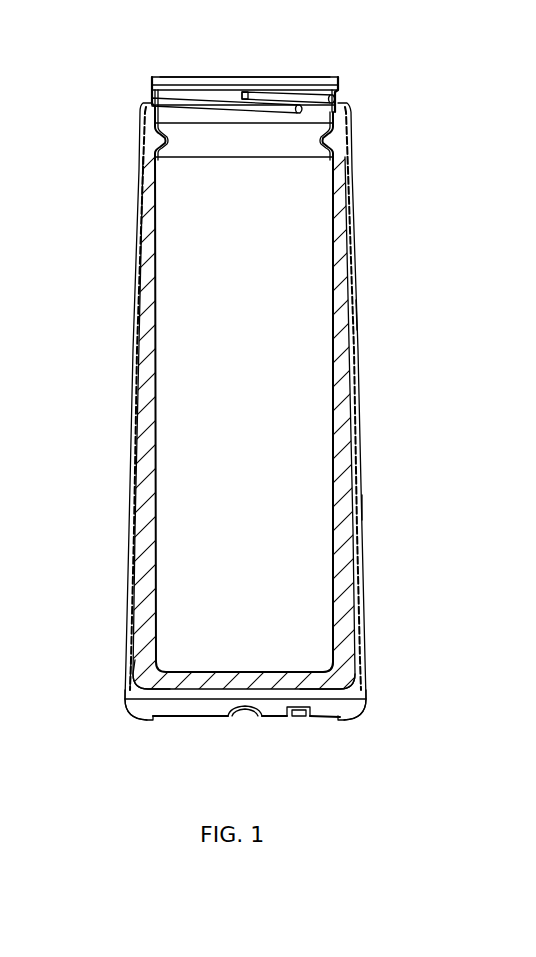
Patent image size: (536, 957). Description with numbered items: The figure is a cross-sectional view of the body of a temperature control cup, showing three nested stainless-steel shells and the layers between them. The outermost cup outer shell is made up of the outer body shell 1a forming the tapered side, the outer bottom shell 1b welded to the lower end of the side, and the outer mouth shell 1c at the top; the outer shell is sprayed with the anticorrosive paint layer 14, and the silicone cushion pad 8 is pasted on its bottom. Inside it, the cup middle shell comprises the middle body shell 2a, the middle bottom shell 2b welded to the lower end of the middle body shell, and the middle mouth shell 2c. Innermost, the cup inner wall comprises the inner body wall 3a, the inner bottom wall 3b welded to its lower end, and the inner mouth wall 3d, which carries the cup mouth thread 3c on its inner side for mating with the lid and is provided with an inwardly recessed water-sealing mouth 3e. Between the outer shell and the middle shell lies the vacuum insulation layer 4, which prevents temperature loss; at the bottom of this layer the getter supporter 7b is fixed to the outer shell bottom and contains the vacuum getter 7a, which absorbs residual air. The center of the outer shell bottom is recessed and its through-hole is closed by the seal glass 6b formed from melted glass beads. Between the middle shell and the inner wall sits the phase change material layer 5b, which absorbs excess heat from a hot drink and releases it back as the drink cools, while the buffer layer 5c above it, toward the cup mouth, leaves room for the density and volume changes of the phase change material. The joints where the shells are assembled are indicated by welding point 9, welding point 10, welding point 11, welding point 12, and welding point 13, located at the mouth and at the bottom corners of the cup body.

The outer body shell 1a is at (353, 202).
The outer bottom shell 1b is at (365, 709).
The outer mouth shell 1c is at (337, 90).
The middle body shell 2a is at (347, 255).
The middle bottom shell 2b is at (313, 688).
The middle mouth shell 2c is at (338, 99).
The inner body wall 3a is at (334, 435).
The inner bottom wall 3b is at (313, 672).
The cup mouth thread 3c is at (193, 103).
The inner mouth wall 3d is at (307, 78).
The water-sealing mouth 3e is at (160, 132).
The vacuum insulation layer 4 is at (353, 313).
The phase change material layer 5b is at (342, 373).
The buffer layer 5c is at (326, 137).
The seal glass 6b is at (238, 713).
The vacuum getter 7a is at (297, 712).
The getter supporter 7b is at (313, 715).
The silicone cushion pad 8 is at (333, 718).
The welding point 9 is at (153, 77).
The welding point 10 is at (154, 90).
The welding point 11 is at (140, 687).
The welding point 12 is at (132, 680).
The welding point 13 is at (126, 697).
The anticorrosive paint layer 14 is at (362, 507).